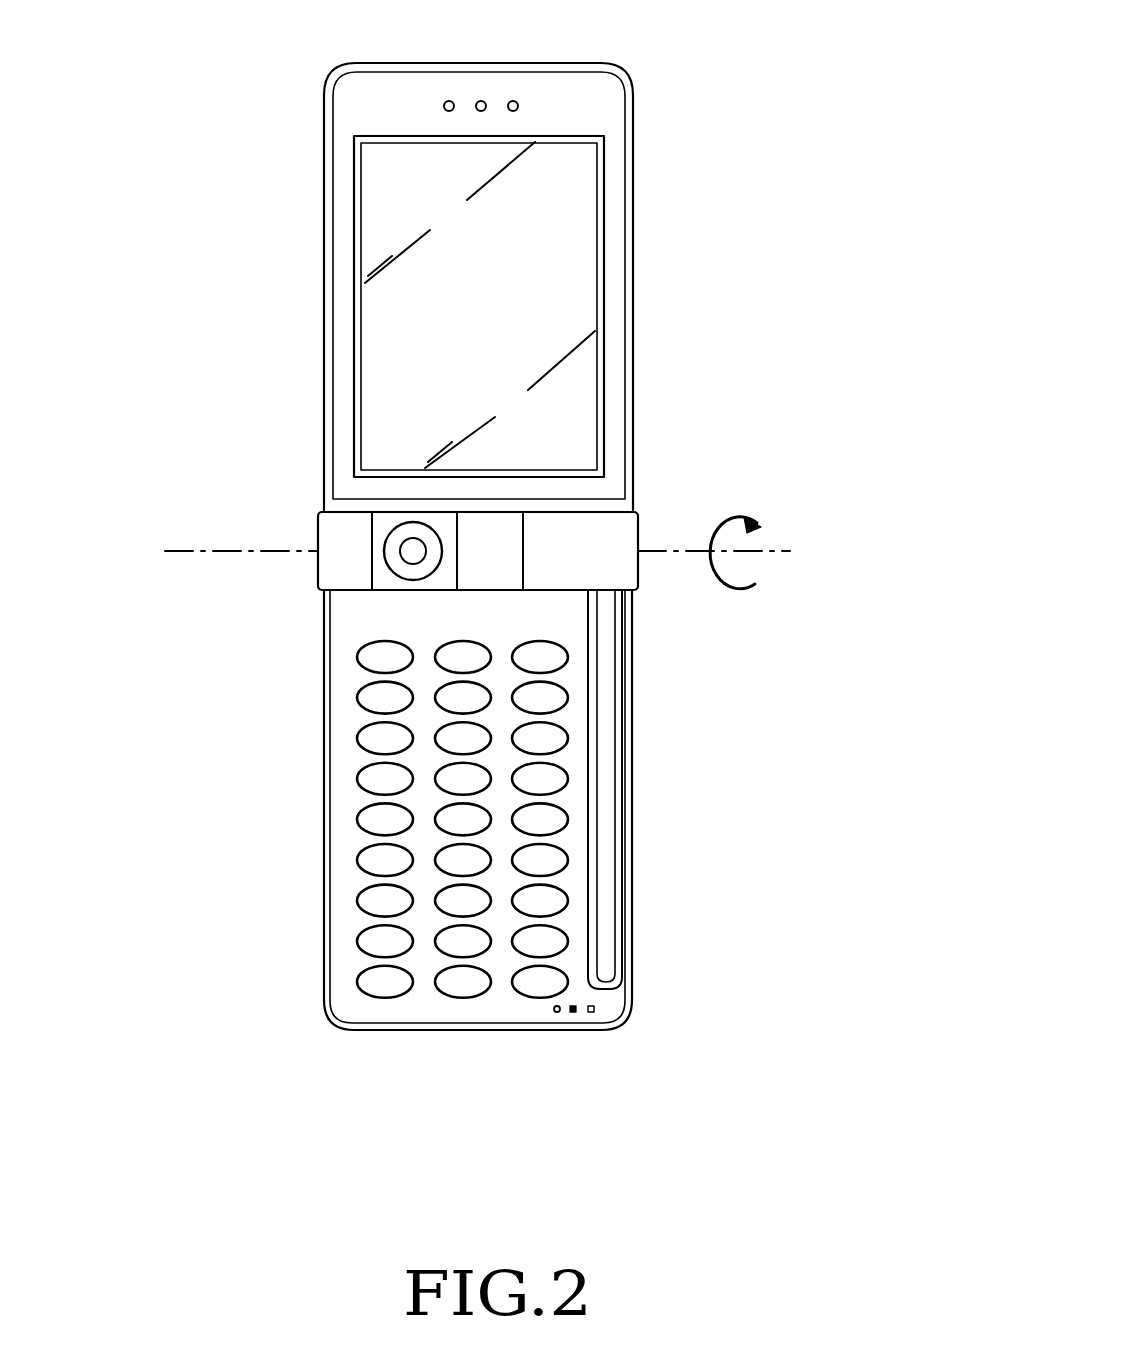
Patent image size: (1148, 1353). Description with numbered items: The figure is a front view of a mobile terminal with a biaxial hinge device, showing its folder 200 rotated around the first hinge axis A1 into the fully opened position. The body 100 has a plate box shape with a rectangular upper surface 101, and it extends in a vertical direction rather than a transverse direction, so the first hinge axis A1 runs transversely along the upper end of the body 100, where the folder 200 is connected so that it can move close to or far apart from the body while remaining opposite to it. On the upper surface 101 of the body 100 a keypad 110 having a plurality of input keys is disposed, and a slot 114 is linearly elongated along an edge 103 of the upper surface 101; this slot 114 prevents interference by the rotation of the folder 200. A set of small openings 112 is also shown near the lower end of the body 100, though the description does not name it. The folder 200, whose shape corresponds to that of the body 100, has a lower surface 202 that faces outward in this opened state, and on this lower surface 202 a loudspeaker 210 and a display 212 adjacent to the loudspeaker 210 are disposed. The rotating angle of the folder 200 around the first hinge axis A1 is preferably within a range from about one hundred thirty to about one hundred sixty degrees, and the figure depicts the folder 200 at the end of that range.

The body 100 is at (487, 867).
The upper surface 101 is at (463, 1013).
The edge 103 is at (632, 855).
The keypad 110 is at (365, 852).
The microphone 112 is at (573, 1013).
The slot 114 is at (603, 746).
The folder 200 is at (551, 255).
The lower surface 202 is at (600, 112).
The loudspeaker 210 is at (481, 100).
The display 212 is at (575, 262).
The first hinge axis A1 is at (777, 551).